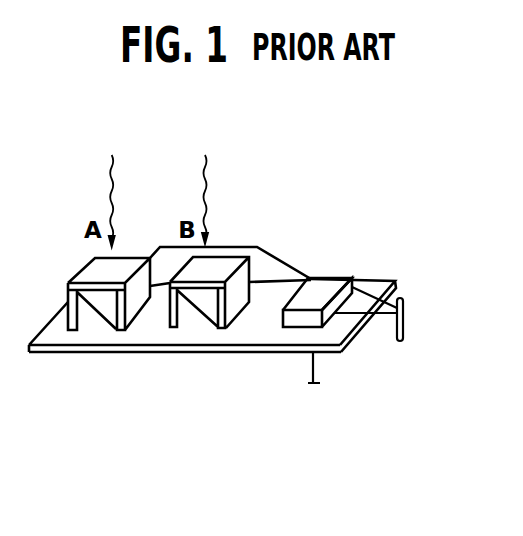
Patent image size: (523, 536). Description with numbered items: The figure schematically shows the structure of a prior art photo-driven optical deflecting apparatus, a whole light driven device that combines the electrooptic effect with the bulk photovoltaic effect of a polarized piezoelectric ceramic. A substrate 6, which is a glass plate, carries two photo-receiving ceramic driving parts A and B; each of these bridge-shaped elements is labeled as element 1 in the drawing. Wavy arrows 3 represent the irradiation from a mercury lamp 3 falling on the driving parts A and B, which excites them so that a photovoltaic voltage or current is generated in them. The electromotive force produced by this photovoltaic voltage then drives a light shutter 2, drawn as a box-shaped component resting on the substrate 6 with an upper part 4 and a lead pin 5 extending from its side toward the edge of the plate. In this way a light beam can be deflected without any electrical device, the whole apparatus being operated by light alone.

The electronic component (A, B) 1 is at (80, 279).
The light shutter 2 is at (300, 319).
The mercury lamp 3 is at (156, 185).
The lid / cap 4 is at (324, 283).
The lead pin 5 is at (400, 342).
The substrate 6 is at (75, 352).